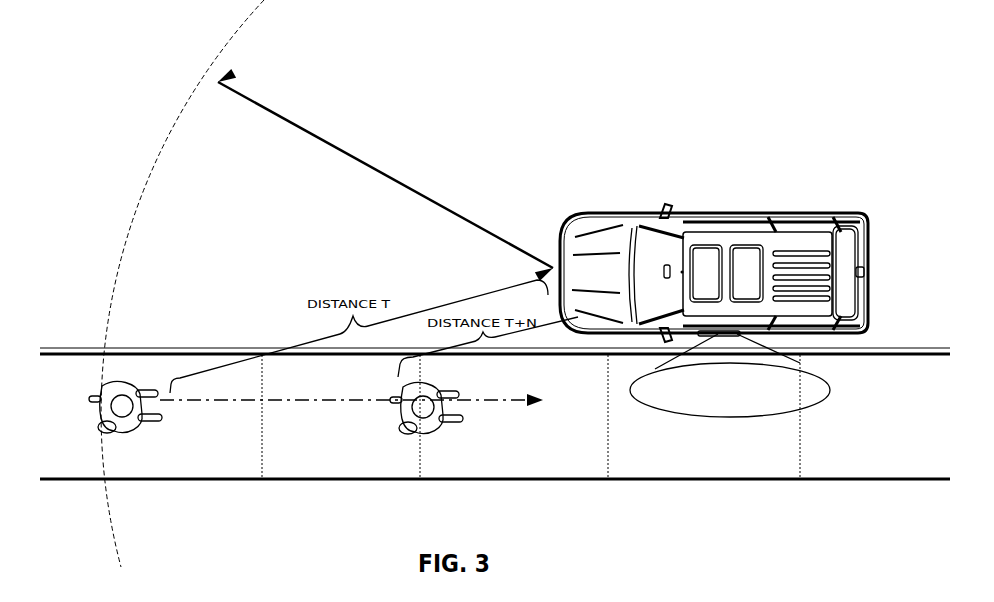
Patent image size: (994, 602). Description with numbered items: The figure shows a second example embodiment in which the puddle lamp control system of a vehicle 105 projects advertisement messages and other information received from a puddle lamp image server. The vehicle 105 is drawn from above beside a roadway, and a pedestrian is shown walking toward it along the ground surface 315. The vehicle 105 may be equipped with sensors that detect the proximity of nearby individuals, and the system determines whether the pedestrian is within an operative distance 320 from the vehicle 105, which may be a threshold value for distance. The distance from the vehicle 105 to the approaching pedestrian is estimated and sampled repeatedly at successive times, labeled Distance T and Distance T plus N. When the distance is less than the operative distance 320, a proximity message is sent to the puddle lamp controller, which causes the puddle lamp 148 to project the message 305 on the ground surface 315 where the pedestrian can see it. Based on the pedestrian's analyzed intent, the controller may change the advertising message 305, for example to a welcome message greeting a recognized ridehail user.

The vehicle 105 is at (590, 212).
The puddle lamp 148 is at (700, 334).
The message 305 is at (715, 417).
The ground surface 315 is at (767, 440).
The operative distance 320 is at (367, 230).